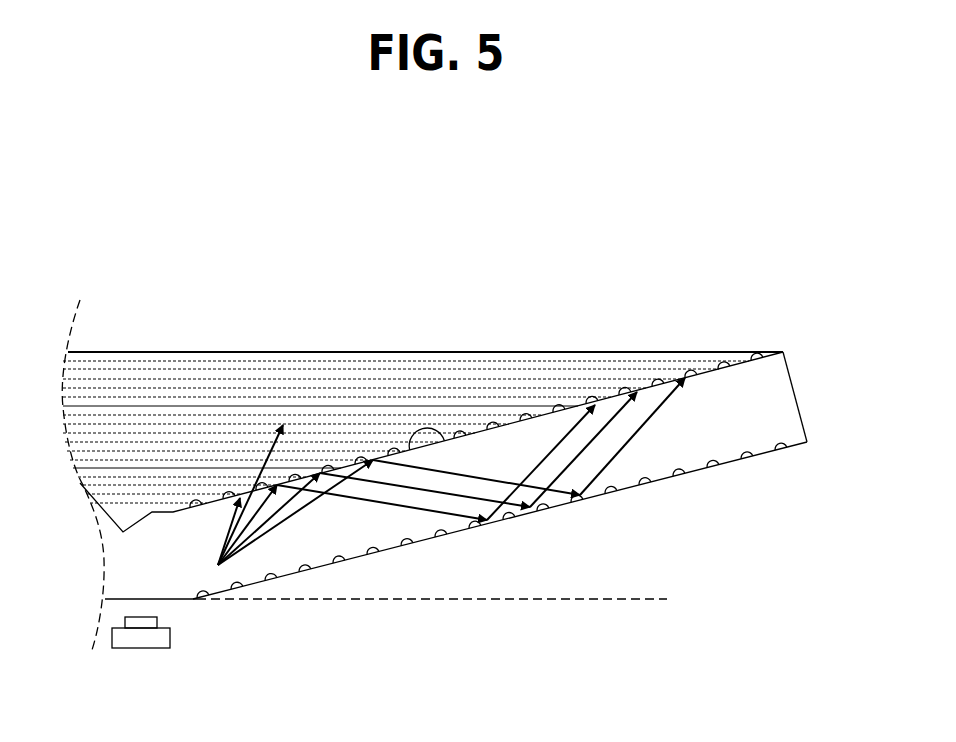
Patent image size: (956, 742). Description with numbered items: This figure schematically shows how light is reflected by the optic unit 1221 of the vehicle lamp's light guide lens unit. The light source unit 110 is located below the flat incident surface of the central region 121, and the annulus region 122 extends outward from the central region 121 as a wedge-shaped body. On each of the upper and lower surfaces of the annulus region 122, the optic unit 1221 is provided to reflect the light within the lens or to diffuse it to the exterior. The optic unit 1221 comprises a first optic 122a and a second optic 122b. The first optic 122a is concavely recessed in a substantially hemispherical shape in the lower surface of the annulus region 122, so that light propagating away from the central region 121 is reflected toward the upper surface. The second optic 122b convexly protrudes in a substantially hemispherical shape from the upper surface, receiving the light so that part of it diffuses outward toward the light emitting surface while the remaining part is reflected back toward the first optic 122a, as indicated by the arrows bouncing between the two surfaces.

The light source unit 110 is at (138, 648).
The central region 121 is at (178, 605).
The annulus region 122 is at (435, 501).
The first optic 122a is at (405, 546).
The second optic 122b is at (437, 427).
The optic unit 1221 is at (500, 576).